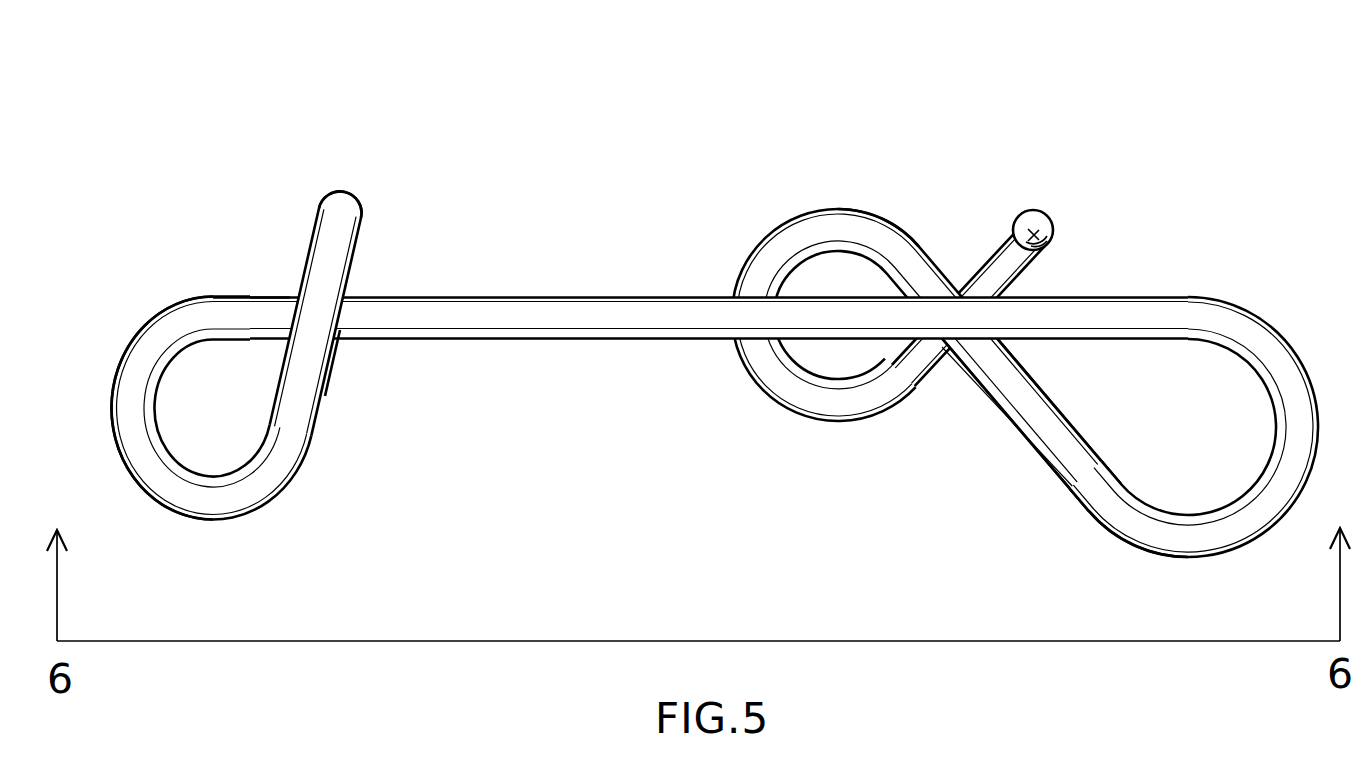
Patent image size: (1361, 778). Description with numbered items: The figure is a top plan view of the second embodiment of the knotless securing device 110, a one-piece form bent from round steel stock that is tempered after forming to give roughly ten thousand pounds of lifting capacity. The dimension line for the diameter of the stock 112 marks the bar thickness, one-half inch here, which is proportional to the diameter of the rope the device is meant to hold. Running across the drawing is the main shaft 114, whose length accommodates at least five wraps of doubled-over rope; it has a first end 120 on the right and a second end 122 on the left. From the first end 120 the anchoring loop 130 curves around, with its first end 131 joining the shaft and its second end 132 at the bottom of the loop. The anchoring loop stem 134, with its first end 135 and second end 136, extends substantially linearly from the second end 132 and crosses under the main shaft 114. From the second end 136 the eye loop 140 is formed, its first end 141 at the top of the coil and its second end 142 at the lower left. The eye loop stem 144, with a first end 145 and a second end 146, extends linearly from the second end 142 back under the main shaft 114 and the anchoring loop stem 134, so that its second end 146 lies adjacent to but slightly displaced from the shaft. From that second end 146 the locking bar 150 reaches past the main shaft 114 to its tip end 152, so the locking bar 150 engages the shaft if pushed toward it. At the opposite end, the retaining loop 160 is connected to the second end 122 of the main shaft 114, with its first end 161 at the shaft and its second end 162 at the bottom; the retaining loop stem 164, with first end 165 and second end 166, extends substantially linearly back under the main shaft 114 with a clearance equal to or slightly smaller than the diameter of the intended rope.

The knotless securing device 110 is at (714, 295).
The diameter of the stock 112 is at (781, 395).
The main shaft 114 is at (538, 342).
The first end of the main shaft 120 is at (1180, 395).
The second end of the main shaft 122 is at (257, 313).
The anchoring loop 130 is at (1274, 410).
The first end of the anchoring loop 131 is at (1266, 348).
The second end of the anchoring loop 132 is at (1124, 511).
The anchoring loop stem 134 is at (1063, 396).
The first end of the anchoring loop stem 135 is at (1105, 482).
The second end of the anchoring loop stem 136 is at (908, 251).
The eye loop 140 is at (943, 337).
The first end of the eye loop 141 is at (858, 224).
The second end of the eye loop 142 is at (763, 372).
The eye loop stem 144 is at (935, 375).
The first end of the eye loop stem 145 is at (840, 400).
The second end of the eye loop stem 146 is at (1033, 210).
The locking bar 150 is at (1125, 185).
The tip end of the locking bar 152 is at (1052, 249).
The retaining loop 160 is at (273, 339).
The first end of the retaining loop 161 is at (170, 329).
The second end of the retaining loop 162 is at (250, 480).
The retaining loop stem 164 is at (330, 388).
The first end of the retaining loop stem 165 is at (360, 298).
The second end of the retaining loop stem 166 is at (340, 206).